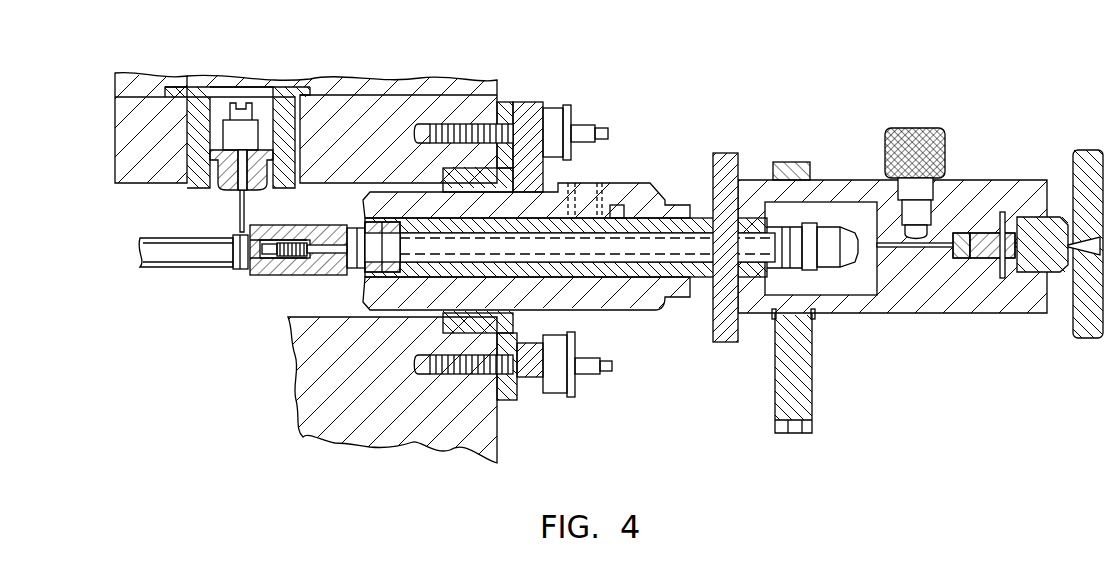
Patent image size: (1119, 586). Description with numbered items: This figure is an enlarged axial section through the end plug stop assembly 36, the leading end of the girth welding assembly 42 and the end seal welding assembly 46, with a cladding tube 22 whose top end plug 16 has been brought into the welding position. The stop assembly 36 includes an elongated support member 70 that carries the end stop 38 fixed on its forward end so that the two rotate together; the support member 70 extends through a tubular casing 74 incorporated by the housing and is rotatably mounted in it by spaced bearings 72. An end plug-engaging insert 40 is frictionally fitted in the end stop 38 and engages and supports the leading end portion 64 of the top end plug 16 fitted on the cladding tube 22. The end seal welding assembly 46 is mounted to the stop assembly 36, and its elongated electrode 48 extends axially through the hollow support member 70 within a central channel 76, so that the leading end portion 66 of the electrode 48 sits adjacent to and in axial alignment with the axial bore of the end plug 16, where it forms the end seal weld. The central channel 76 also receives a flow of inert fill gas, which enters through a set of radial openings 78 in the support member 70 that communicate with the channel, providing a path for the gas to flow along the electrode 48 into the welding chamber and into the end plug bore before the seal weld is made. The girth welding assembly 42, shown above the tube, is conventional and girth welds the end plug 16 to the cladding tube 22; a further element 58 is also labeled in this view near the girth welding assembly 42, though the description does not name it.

The top end plug 16 is at (236, 266).
The cladding tube 22 is at (190, 267).
The stop assembly 36 is at (320, 283).
The end stop 38 is at (312, 262).
The end plug-engaging insert 40 is at (313, 276).
The girth welding assembly 42 is at (185, 198).
The end seal welding assembly 46 is at (866, 317).
The end seal welding electrode 48 is at (675, 290).
The needle 58 is at (237, 224).
The leading end portion of the top end plug 64 is at (262, 240).
The leading end portion of the end seal welding electrode 66 is at (278, 258).
The support member 70 is at (423, 258).
The bearings 72 is at (380, 228).
The tubular casing 74 is at (632, 273).
The central channel 76 is at (612, 246).
The radial openings 78 is at (582, 250).